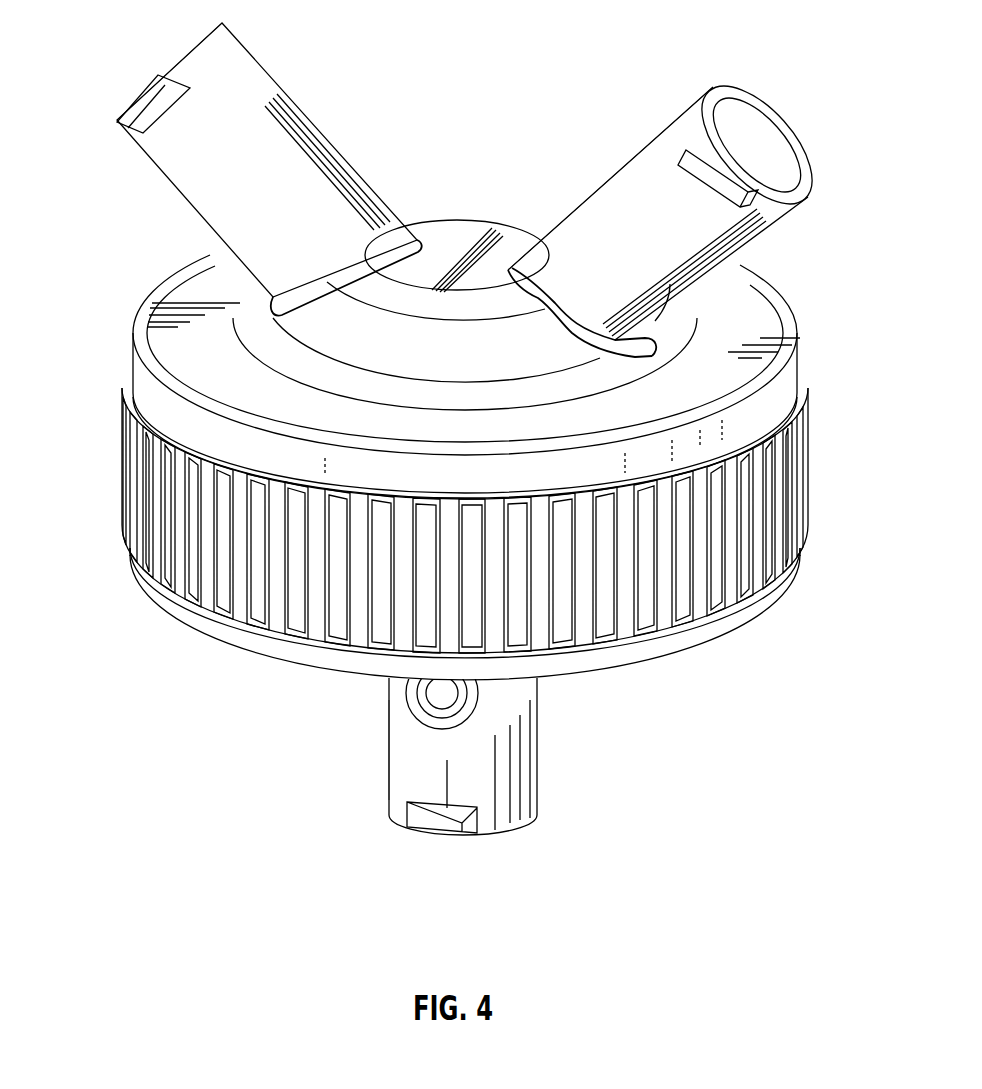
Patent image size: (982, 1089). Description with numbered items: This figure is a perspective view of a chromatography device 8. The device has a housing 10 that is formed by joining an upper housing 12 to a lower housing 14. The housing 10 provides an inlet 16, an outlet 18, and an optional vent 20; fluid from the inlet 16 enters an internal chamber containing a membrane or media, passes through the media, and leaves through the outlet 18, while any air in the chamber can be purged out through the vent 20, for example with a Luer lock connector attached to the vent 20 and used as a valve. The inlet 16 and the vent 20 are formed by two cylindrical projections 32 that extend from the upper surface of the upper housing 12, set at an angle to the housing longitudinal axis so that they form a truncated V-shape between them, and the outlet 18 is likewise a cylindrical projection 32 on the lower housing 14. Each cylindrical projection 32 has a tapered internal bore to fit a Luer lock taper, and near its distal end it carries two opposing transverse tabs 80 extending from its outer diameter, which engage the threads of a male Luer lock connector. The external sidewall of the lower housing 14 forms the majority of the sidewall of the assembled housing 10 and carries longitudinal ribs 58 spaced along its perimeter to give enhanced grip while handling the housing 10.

The chromatography device 8 is at (100, 305).
The housing 10 is at (462, 534).
The upper housing 12 is at (770, 325).
The lower housing 14 is at (750, 603).
The inlet 16 is at (184, 62).
The outlet 18 is at (508, 832).
The vent 20 is at (775, 138).
The cylindrical projection 32 is at (180, 191).
The longitudinal ribs 58 is at (806, 482).
The transverse tabs 80 is at (140, 115).